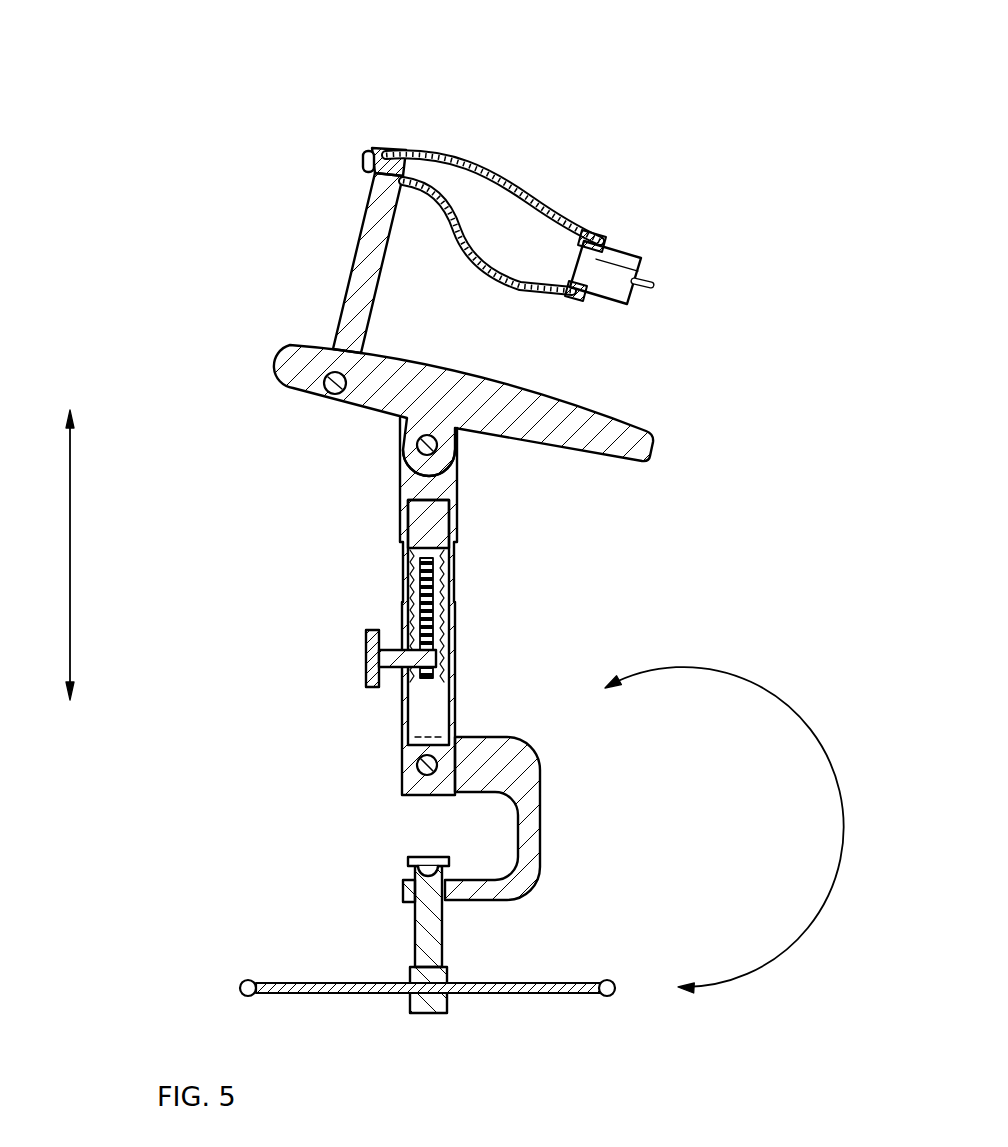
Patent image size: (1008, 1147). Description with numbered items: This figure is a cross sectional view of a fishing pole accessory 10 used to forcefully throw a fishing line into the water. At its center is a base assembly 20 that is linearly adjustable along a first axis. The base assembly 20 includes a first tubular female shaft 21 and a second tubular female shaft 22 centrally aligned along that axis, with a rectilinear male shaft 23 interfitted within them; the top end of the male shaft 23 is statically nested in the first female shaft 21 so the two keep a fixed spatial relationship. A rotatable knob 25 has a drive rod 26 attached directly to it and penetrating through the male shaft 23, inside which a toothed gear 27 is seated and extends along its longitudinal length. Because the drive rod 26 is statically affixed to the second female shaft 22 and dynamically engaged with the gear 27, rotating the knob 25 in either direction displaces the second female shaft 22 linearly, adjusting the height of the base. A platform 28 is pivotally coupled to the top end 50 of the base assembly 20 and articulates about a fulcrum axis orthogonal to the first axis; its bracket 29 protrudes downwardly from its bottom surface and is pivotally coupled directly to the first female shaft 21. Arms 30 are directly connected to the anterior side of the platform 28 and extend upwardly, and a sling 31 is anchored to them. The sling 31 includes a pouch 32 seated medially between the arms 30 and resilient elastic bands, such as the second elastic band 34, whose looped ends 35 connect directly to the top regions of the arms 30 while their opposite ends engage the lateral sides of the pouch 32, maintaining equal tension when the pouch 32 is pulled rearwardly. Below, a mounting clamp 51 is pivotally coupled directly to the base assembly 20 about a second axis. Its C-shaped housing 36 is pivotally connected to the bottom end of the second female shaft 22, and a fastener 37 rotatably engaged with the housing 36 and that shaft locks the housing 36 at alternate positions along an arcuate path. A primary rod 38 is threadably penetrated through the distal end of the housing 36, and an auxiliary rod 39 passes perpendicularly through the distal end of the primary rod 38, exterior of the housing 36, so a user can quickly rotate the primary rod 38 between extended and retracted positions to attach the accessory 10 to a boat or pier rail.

The fishing pole accessory 10 is at (164, 113).
The base assembly 20 is at (335, 568).
The first tubular female shaft 21 is at (415, 487).
The second tubular female shaft 22 is at (442, 703).
The male shaft 23 is at (430, 530).
The rotatable knob 25 is at (367, 647).
The drive rod 26 is at (392, 663).
The toothed gear 27 is at (435, 587).
The platform 28 is at (620, 432).
The bracket 29 is at (450, 437).
The arms 30 is at (358, 277).
The sling 31 is at (464, 141).
The pouch 32 is at (618, 252).
The second elastic band 34 is at (508, 187).
The looped ends 35 is at (366, 150).
The C-shaped housing 36 is at (517, 757).
The fastener 37 is at (425, 764).
The primary rod 38 is at (433, 928).
The auxiliary rod 39 is at (578, 985).
The top end of the base assembly 50 is at (447, 480).
The mounting clamp 51 is at (340, 877).